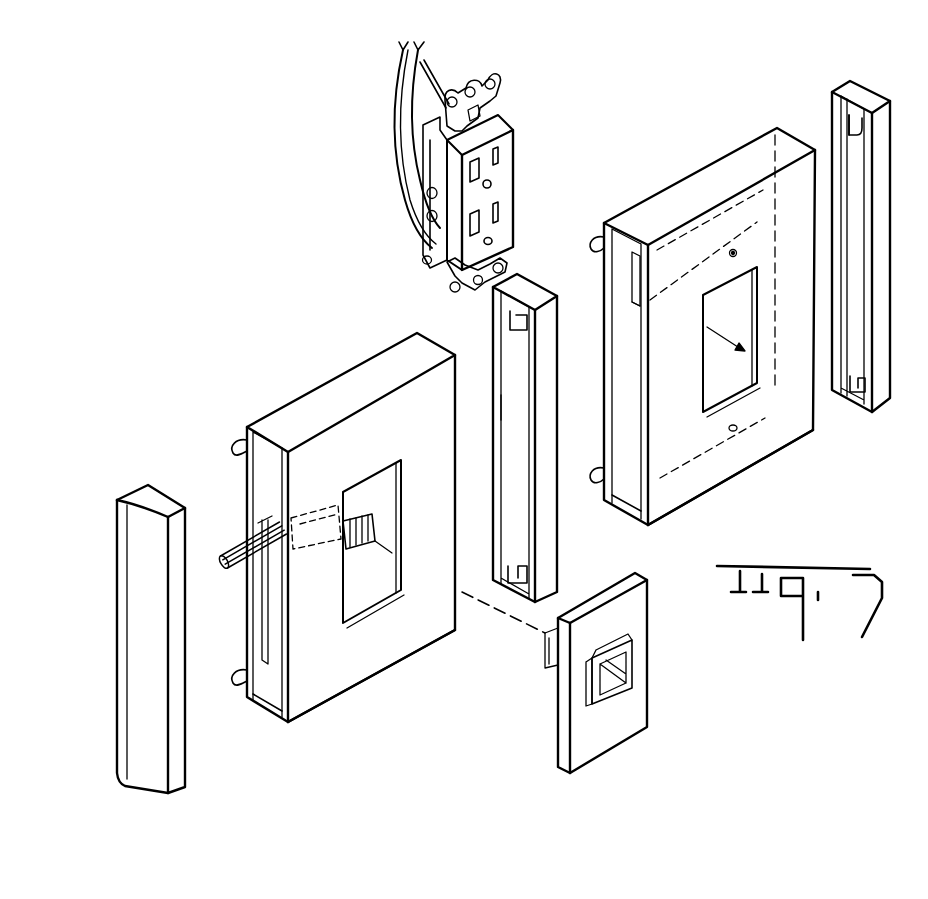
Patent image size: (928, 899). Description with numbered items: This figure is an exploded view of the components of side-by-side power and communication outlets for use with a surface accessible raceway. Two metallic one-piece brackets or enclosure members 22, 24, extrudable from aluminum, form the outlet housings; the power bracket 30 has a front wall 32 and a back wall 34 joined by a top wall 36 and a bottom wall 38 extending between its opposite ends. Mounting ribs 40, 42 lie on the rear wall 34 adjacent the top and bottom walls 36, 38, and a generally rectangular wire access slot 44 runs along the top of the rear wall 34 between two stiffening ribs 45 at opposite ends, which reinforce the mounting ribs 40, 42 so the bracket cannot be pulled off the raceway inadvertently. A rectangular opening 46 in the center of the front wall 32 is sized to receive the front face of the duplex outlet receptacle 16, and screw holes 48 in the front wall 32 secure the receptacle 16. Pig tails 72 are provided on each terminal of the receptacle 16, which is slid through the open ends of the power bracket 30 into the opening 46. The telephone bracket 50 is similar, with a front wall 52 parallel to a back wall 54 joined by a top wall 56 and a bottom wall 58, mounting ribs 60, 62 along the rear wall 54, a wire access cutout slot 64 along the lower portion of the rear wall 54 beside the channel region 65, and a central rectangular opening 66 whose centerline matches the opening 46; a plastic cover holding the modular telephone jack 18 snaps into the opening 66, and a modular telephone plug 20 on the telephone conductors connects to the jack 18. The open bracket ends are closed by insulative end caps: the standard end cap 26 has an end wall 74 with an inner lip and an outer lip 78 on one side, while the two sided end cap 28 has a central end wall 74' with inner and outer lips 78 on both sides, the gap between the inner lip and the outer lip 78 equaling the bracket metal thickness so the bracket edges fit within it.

The duplex outlet receptacle 16 is at (505, 175).
The modular telephone jack 18 is at (632, 684).
The modular telephone plug 20 is at (370, 523).
The one-piece bracket or enclosure member 22 is at (688, 319).
The one-piece bracket or enclosure member 24 is at (327, 538).
The standard end cap 26 is at (870, 102).
The two sided end cap 28 is at (502, 412).
The power bracket 30 is at (680, 485).
The front wall 32 is at (773, 440).
The back wall 34 is at (604, 397).
The top wall 36 is at (673, 207).
The bottom wall 38 is at (633, 505).
The mounting rib 40 is at (596, 240).
The mounting rib 42 is at (600, 468).
The wire access slot 44 is at (632, 268).
The stiffening rib 45 is at (640, 304).
The rectangular opening 46 is at (756, 386).
The screw hole 48 is at (735, 252).
The telephone bracket 50 is at (336, 678).
The front wall 52 is at (397, 647).
The back wall 54 is at (252, 517).
The top wall 56 is at (351, 381).
The bottom wall 58 is at (265, 705).
The mounting rib 60 is at (232, 446).
The mounting rib 62 is at (240, 672).
The wire access cutout slot 64 is at (262, 576).
The channel 65 is at (248, 615).
The rectangular opening 66 is at (390, 483).
The pig tails 72 is at (403, 125).
The end wall 74 is at (115, 639).
The central end wall 74' is at (483, 421).
The outer lip 78 is at (532, 357).